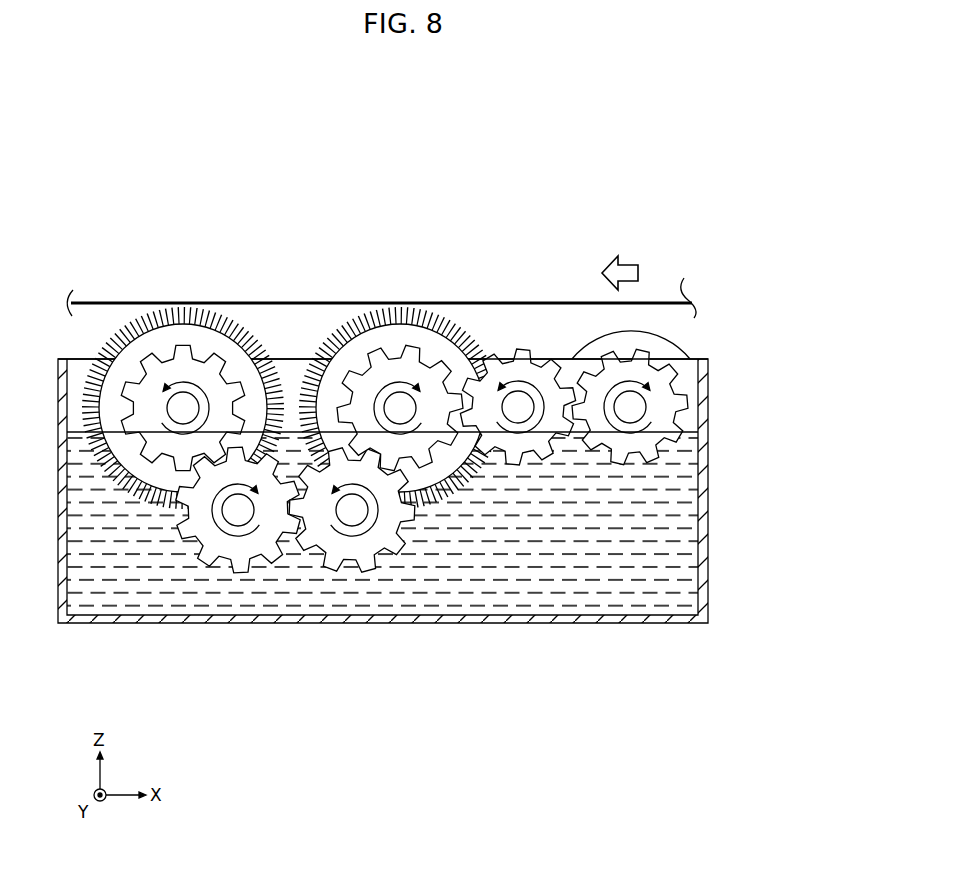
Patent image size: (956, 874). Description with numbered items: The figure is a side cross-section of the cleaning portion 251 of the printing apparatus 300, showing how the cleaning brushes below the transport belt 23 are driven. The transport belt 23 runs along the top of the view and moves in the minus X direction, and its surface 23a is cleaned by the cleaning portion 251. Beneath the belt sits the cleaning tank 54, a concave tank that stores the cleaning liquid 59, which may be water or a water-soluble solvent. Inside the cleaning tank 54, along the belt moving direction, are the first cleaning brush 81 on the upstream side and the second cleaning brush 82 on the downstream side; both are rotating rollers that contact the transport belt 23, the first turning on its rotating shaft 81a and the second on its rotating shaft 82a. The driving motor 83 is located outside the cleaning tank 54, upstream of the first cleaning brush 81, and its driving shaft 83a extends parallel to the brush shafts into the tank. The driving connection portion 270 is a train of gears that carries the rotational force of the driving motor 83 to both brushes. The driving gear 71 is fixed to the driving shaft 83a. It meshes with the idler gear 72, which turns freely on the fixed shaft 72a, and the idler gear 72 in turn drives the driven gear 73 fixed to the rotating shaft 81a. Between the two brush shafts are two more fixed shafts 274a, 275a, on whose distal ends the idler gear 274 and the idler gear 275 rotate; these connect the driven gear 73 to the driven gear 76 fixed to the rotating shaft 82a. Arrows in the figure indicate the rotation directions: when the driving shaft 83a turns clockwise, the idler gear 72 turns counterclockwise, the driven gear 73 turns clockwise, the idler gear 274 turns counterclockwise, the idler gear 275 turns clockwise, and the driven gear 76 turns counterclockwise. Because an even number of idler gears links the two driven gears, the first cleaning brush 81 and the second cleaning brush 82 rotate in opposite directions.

The printing apparatus 300 is at (732, 134).
The cleaning portion 251 is at (588, 233).
The transport belt 23 is at (382, 286).
The surface of the transport belt 23a is at (667, 310).
The driven gear 76 is at (138, 372).
The second cleaning brush 82 is at (142, 378).
The rotating shaft 82a is at (180, 400).
The driven gear 73 is at (352, 370).
The first cleaning brush 81 is at (362, 376).
The rotating shaft 81a is at (397, 400).
The idler gear 72 is at (500, 357).
The fixed shaft 72a is at (520, 403).
The driving gear 71 is at (580, 393).
The driving motor 83 is at (600, 340).
The driving shaft 83a is at (631, 403).
The driving connection portion 270 is at (685, 370).
The idler gear 275 is at (197, 550).
The fixed shaft 275a is at (237, 522).
The idler gear 274 is at (317, 557).
The fixed shaft 274a is at (352, 523).
The cleaning liquid 59 is at (653, 603).
The cleaning tank 54 is at (709, 527).